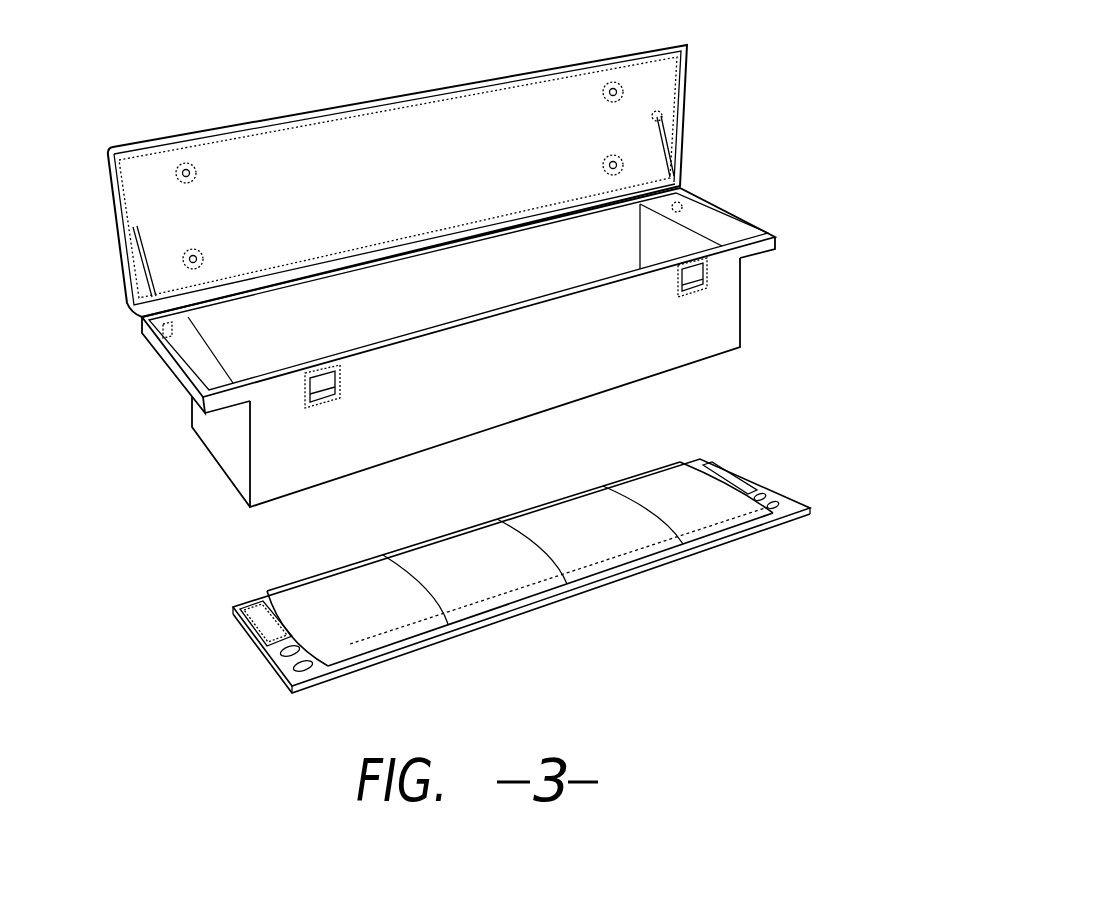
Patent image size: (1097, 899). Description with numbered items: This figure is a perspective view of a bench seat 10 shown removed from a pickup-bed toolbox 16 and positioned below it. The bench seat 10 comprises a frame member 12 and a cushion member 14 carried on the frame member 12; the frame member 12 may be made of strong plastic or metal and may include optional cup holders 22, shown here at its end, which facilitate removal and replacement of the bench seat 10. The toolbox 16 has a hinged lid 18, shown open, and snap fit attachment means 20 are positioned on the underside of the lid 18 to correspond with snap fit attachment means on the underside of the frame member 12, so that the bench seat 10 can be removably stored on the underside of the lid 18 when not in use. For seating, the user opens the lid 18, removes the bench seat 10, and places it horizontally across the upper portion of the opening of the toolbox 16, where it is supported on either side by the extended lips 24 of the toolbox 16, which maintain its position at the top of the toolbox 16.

The bench seat 10 is at (518, 584).
The frame member 12 is at (730, 538).
The cushion member 14 is at (557, 517).
The toolbox 16 is at (680, 342).
The lid 18 is at (390, 132).
The snap fit attachment means 20 is at (200, 250).
The cup holders 22 is at (275, 650).
The extended lips 24 is at (777, 240).